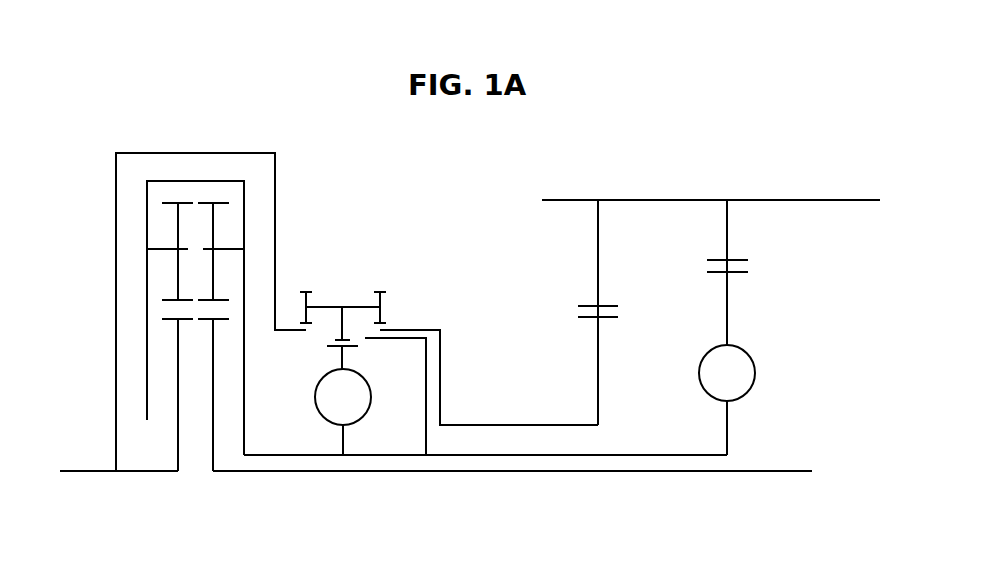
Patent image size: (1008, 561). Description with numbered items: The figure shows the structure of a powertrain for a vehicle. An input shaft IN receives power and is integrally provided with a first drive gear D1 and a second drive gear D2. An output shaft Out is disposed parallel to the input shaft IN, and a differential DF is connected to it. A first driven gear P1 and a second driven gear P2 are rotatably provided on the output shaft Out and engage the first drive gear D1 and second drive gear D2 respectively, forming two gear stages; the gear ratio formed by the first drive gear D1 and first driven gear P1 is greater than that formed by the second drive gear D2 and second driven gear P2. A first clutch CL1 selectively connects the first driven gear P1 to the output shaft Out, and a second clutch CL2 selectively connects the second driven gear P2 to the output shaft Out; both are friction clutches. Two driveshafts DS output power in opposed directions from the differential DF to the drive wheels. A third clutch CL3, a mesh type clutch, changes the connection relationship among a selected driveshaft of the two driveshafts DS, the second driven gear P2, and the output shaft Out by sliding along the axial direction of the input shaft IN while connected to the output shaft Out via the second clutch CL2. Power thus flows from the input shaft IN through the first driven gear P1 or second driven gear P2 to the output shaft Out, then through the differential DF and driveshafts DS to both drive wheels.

The differential DF is at (140, 212).
The first clutch CL1 is at (727, 400).
The second clutch CL2 is at (343, 412).
The third clutch CL3 is at (361, 298).
The first drive gear D1 is at (748, 260).
The second drive gear D2 is at (580, 306).
The first driven gear P1 is at (748, 272).
The second driven gear P2 is at (580, 317).
The input shaft IN is at (840, 200).
The output shaft Out is at (535, 472).
The driveshafts DS is at (85, 472).